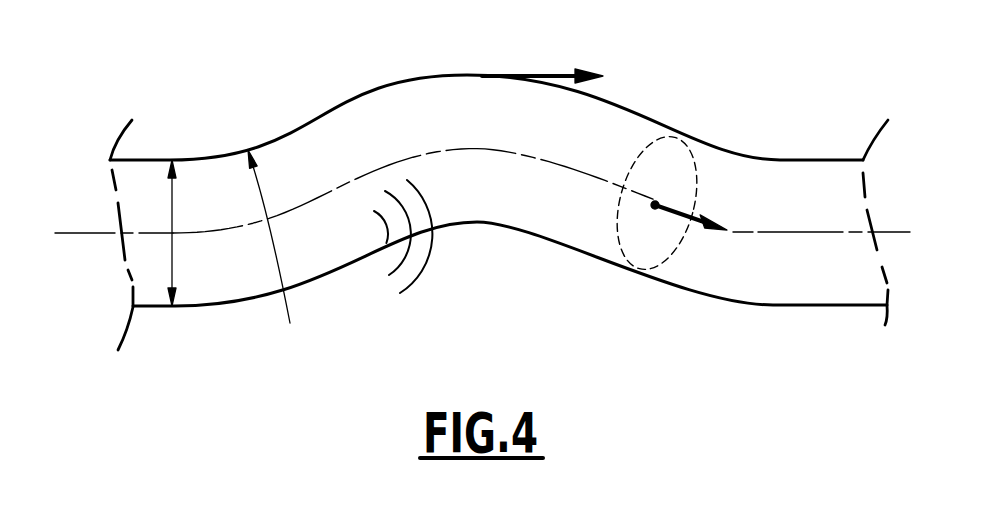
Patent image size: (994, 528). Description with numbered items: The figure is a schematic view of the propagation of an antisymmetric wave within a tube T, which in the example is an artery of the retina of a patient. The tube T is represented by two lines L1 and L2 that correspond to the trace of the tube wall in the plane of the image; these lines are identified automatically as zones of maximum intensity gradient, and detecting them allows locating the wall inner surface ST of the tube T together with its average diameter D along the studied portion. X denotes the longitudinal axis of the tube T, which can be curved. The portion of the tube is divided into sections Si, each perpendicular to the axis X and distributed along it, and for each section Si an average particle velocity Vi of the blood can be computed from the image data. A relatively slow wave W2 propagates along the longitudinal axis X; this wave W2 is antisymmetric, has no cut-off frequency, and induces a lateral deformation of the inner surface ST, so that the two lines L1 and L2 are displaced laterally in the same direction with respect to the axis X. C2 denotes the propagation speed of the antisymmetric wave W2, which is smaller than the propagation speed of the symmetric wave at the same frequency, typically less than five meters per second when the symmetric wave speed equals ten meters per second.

The line L2 is at (215, 153).
The line L1 is at (233, 303).
The tube T is at (802, 173).
The longitudinal axis X is at (473, 198).
The average diameter D is at (185, 233).
The wall inner surface ST is at (279, 261).
The slow antisymmetric wave W2 is at (429, 298).
The propagation speed of the antisymmetric wave C2 is at (542, 58).
The section Si is at (674, 173).
The average particle velocity Vi is at (689, 233).